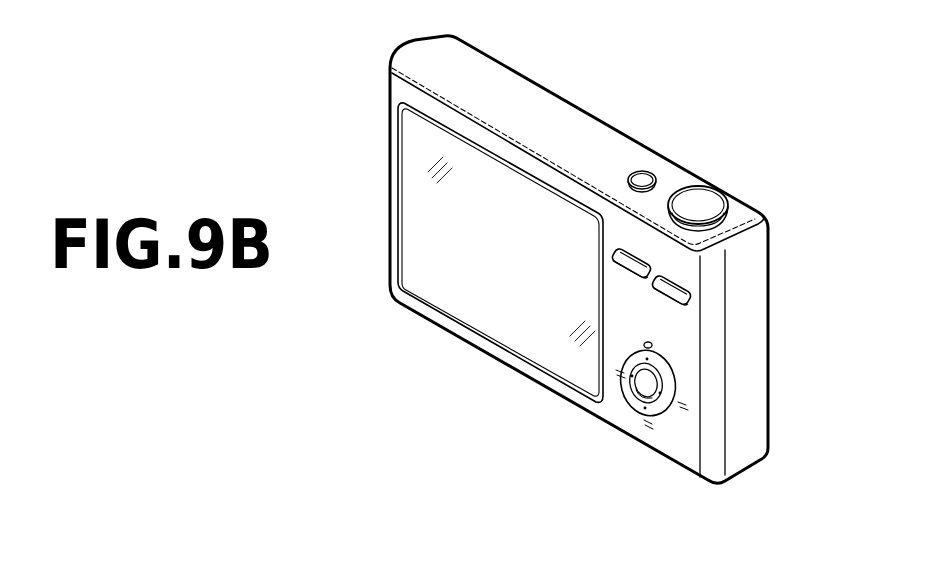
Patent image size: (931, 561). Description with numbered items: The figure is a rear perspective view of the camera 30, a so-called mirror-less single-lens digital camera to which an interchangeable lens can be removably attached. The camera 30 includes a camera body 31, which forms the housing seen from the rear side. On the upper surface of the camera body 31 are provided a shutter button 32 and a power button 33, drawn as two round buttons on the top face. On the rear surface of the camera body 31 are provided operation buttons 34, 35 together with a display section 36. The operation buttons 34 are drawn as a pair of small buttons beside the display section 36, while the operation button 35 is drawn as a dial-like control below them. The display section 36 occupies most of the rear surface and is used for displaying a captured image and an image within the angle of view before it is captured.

The camera 30 is at (550, 275).
The camera body 31 is at (758, 367).
The shutter button 32 is at (708, 199).
The power button 33 is at (646, 176).
The operation button 34 is at (690, 307).
The operation button 35 is at (660, 410).
The display section 36 is at (483, 320).